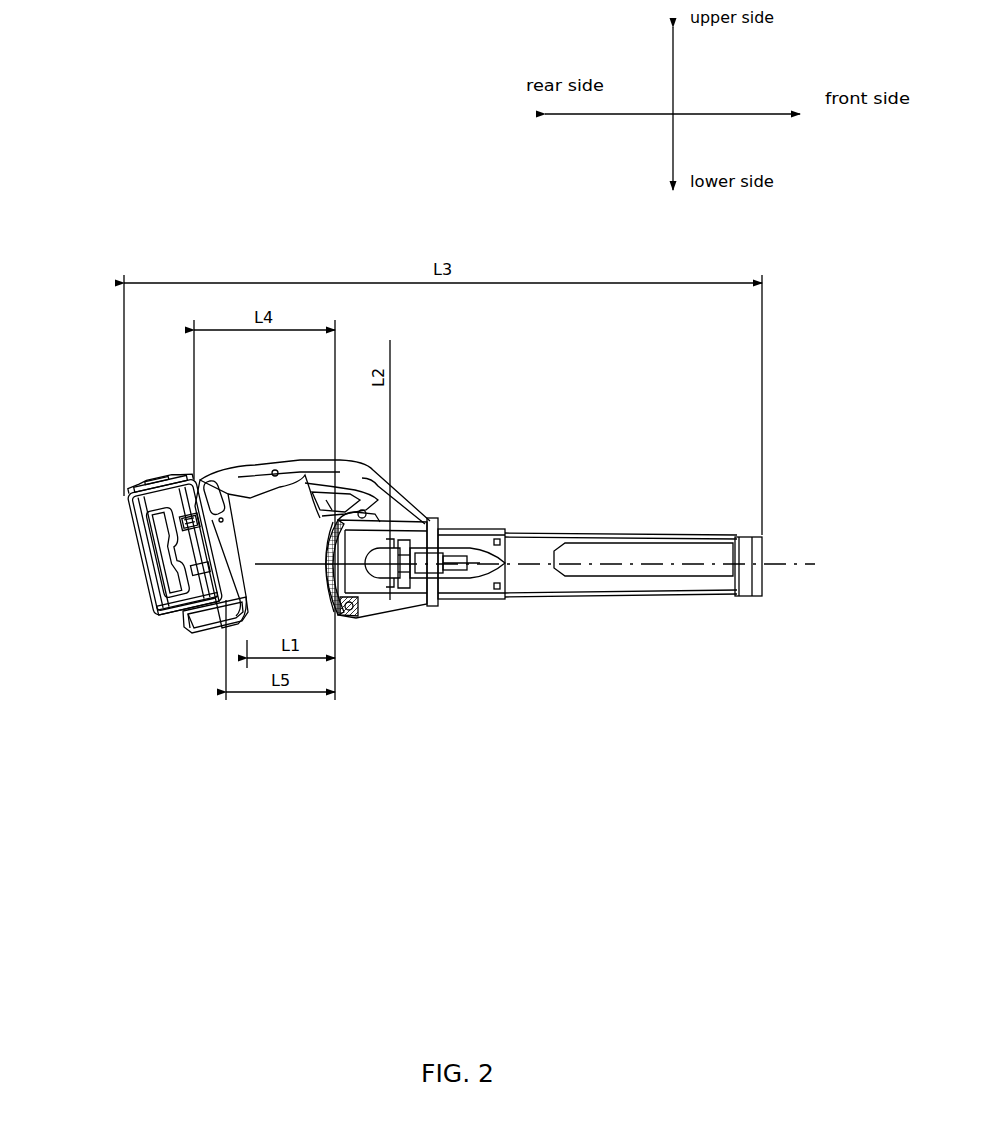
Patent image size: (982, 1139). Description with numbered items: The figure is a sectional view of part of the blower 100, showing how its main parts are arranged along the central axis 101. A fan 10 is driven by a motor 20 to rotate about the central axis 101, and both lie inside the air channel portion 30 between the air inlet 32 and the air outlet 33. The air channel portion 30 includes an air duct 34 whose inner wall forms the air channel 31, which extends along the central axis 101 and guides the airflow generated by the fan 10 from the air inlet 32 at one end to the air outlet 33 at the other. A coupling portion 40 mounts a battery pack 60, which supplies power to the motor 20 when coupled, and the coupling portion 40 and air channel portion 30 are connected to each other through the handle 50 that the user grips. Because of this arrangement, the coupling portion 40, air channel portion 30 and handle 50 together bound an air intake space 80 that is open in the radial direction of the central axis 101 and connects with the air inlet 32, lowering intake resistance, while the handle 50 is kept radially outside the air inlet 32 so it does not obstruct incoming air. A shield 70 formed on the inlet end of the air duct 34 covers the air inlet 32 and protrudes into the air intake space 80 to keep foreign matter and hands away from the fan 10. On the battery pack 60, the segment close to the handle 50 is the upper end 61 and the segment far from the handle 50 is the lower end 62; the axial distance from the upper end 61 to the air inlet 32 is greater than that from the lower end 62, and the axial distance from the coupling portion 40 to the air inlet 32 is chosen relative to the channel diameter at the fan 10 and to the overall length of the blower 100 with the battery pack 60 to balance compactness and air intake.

The blower 100 is at (516, 238).
The central axis 101 is at (544, 550).
The fan 10 is at (390, 548).
The motor 20 is at (440, 572).
The air channel portion 30 is at (565, 495).
The air channel 31 is at (527, 545).
The air inlet 32 is at (345, 592).
The air outlet 33 is at (768, 582).
The air duct 34 is at (652, 530).
The coupling portion 40 is at (211, 620).
The handle 50 is at (275, 463).
The battery pack 60 is at (148, 576).
The upper end 61 is at (150, 485).
The lower end 62 is at (164, 608).
The shield 70 is at (328, 608).
The air intake space 80 is at (268, 541).